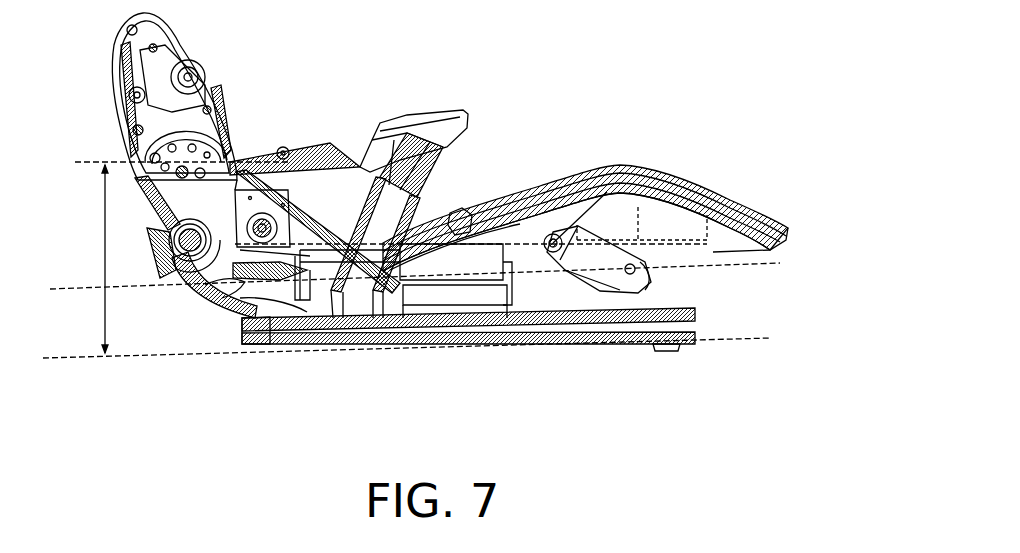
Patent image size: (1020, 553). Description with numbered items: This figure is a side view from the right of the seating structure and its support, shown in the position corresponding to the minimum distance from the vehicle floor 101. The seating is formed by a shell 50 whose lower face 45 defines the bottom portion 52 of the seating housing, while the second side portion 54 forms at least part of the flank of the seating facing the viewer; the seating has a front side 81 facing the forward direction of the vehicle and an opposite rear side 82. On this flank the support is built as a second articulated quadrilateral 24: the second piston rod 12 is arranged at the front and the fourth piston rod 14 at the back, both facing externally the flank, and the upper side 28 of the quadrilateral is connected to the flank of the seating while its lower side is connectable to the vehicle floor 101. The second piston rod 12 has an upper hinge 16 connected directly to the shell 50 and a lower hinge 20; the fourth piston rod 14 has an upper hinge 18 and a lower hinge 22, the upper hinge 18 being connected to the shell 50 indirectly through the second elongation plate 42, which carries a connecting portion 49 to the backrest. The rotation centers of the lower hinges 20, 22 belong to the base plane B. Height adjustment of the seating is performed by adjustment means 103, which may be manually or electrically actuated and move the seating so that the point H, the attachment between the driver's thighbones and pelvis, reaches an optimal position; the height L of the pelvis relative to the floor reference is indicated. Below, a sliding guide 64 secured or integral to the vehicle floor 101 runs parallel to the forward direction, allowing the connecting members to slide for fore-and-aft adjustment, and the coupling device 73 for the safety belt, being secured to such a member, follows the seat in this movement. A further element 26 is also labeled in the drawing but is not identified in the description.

The second piston rod 12 is at (587, 343).
The fourth piston rod 14 is at (213, 303).
The upper hinge 16 is at (603, 207).
The upper hinge 18 is at (168, 252).
The lower hinge 20 is at (650, 280).
The lower hinge 22 is at (272, 352).
The second articulated quadrilateral 24 is at (522, 227).
The vertical link 26 is at (510, 280).
The upper side 28 is at (465, 212).
The second elongation plate 42 is at (333, 307).
The lower face 45 is at (490, 323).
The connecting portion 49 is at (233, 140).
The shell 50 is at (710, 172).
The bottom portion 52 is at (434, 354).
The second side portion 54 is at (655, 223).
The sliding guide 64 is at (632, 345).
The coupling device 73 is at (440, 167).
The front side 81 is at (785, 206).
The rear side 82 is at (190, 299).
The vehicle floor 101 is at (737, 340).
The adjustment means 103 is at (320, 157).
The point H is at (290, 149).
The height L is at (103, 240).
The base plane B is at (778, 270).